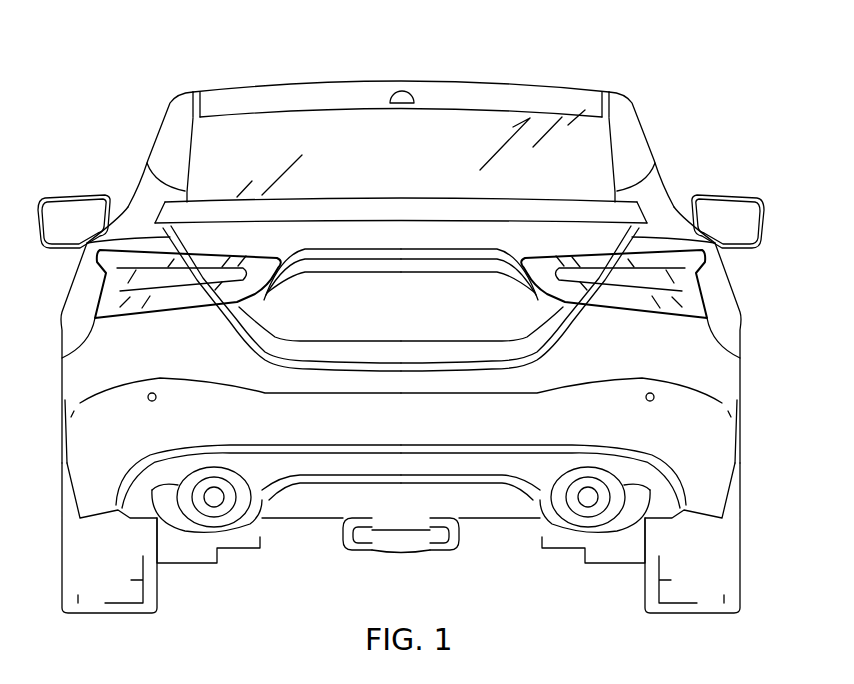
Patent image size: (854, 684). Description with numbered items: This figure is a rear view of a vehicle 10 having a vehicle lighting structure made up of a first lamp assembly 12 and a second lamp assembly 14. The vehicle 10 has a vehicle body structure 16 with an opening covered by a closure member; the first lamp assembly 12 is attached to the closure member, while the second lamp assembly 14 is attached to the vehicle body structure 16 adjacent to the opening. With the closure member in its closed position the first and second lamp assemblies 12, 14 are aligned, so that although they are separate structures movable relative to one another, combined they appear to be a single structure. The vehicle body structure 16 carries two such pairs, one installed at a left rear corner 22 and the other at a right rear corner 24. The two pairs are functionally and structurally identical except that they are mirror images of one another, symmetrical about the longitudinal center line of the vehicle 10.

The vehicle 10 is at (135, 72).
The first lamp assembly 12 is at (210, 246).
The second lamp assembly 14 is at (137, 246).
The vehicle body structure 16 is at (515, 78).
The left rear corner 22 is at (73, 325).
The right rear corner 24 is at (728, 322).